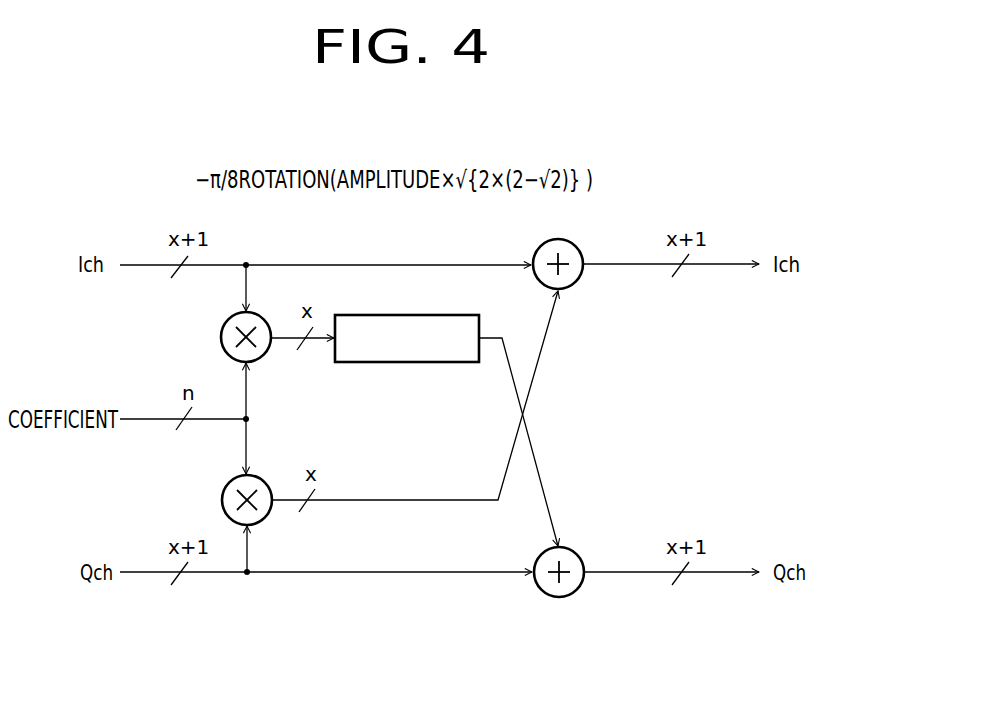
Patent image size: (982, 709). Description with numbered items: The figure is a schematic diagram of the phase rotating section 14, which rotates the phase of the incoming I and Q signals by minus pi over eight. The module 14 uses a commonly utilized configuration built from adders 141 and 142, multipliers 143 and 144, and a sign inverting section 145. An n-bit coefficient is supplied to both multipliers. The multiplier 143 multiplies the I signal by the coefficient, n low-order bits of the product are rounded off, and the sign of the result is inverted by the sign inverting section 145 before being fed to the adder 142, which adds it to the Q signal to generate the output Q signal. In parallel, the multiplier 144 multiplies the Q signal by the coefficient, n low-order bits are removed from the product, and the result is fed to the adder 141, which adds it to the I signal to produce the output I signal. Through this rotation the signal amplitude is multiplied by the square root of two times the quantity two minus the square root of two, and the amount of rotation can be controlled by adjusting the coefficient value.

The phase rotating section 14 is at (790, 200).
The adder 141 is at (576, 281).
The adder 142 is at (582, 588).
The multiplier 143 is at (221, 338).
The multiplier 144 is at (222, 500).
The sign inverting section 145 is at (408, 363).